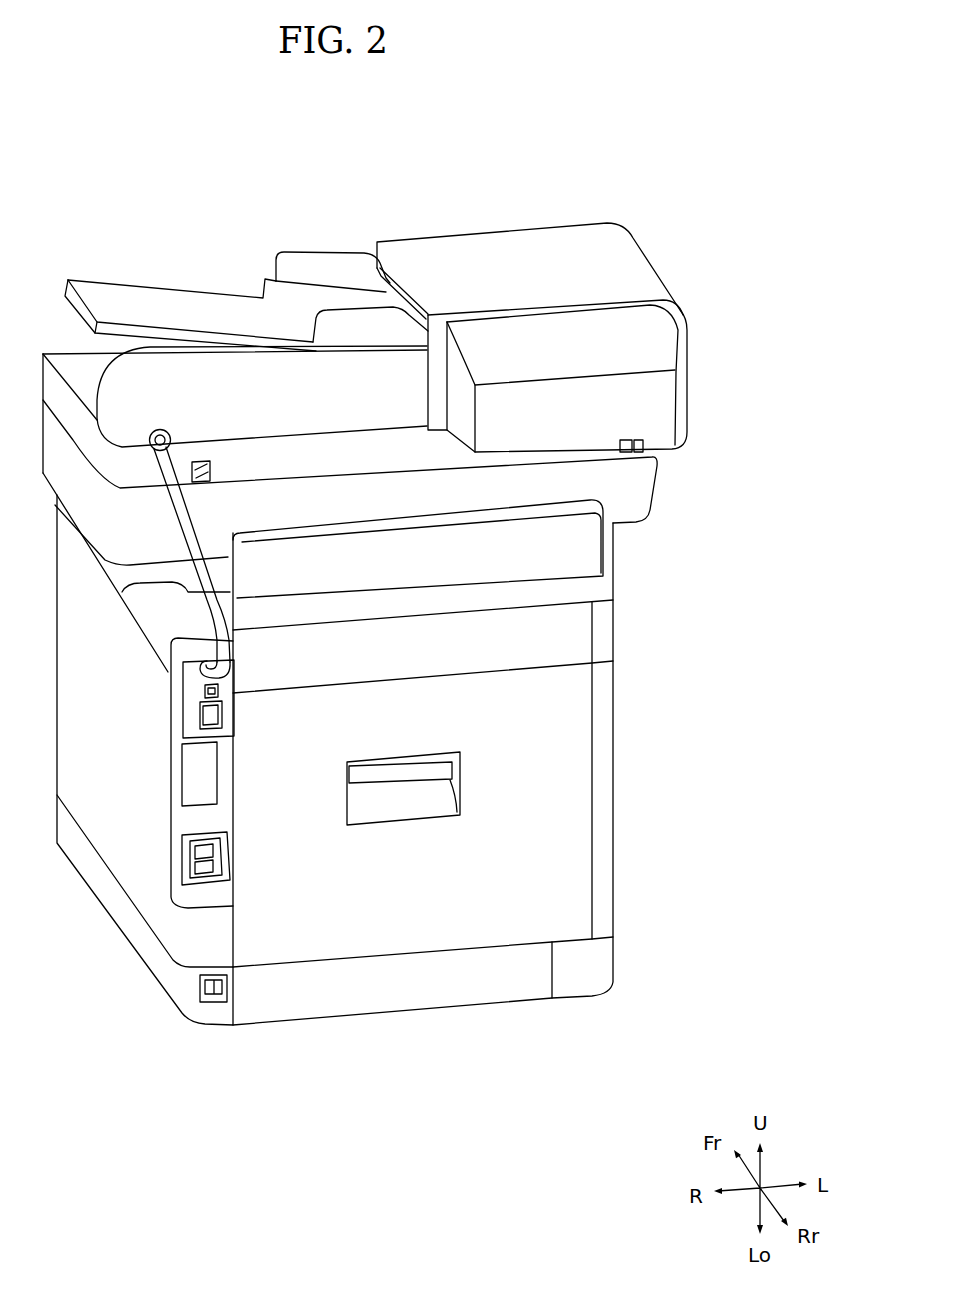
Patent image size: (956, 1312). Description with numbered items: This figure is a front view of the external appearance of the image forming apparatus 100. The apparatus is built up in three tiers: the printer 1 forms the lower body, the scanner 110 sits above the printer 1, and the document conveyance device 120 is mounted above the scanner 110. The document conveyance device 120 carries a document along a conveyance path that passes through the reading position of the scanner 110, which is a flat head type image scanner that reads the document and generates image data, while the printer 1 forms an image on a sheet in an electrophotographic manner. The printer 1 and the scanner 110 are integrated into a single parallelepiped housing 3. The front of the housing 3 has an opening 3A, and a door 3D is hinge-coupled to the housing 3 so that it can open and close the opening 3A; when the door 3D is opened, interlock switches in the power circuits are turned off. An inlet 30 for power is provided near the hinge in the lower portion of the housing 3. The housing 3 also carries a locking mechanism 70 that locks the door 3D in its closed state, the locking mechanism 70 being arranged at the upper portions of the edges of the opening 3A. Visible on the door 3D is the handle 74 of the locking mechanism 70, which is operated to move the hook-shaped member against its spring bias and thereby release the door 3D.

The printer 1 is at (644, 609).
The housing 3 is at (616, 712).
The opening 3A is at (587, 827).
The door 3D is at (593, 777).
The inlet 30 is at (213, 988).
The locking mechanism 70 is at (461, 774).
The handle 74 is at (461, 760).
The image forming apparatus 100 is at (472, 209).
The scanner 110 is at (675, 485).
The document conveyance device 120 is at (716, 321).